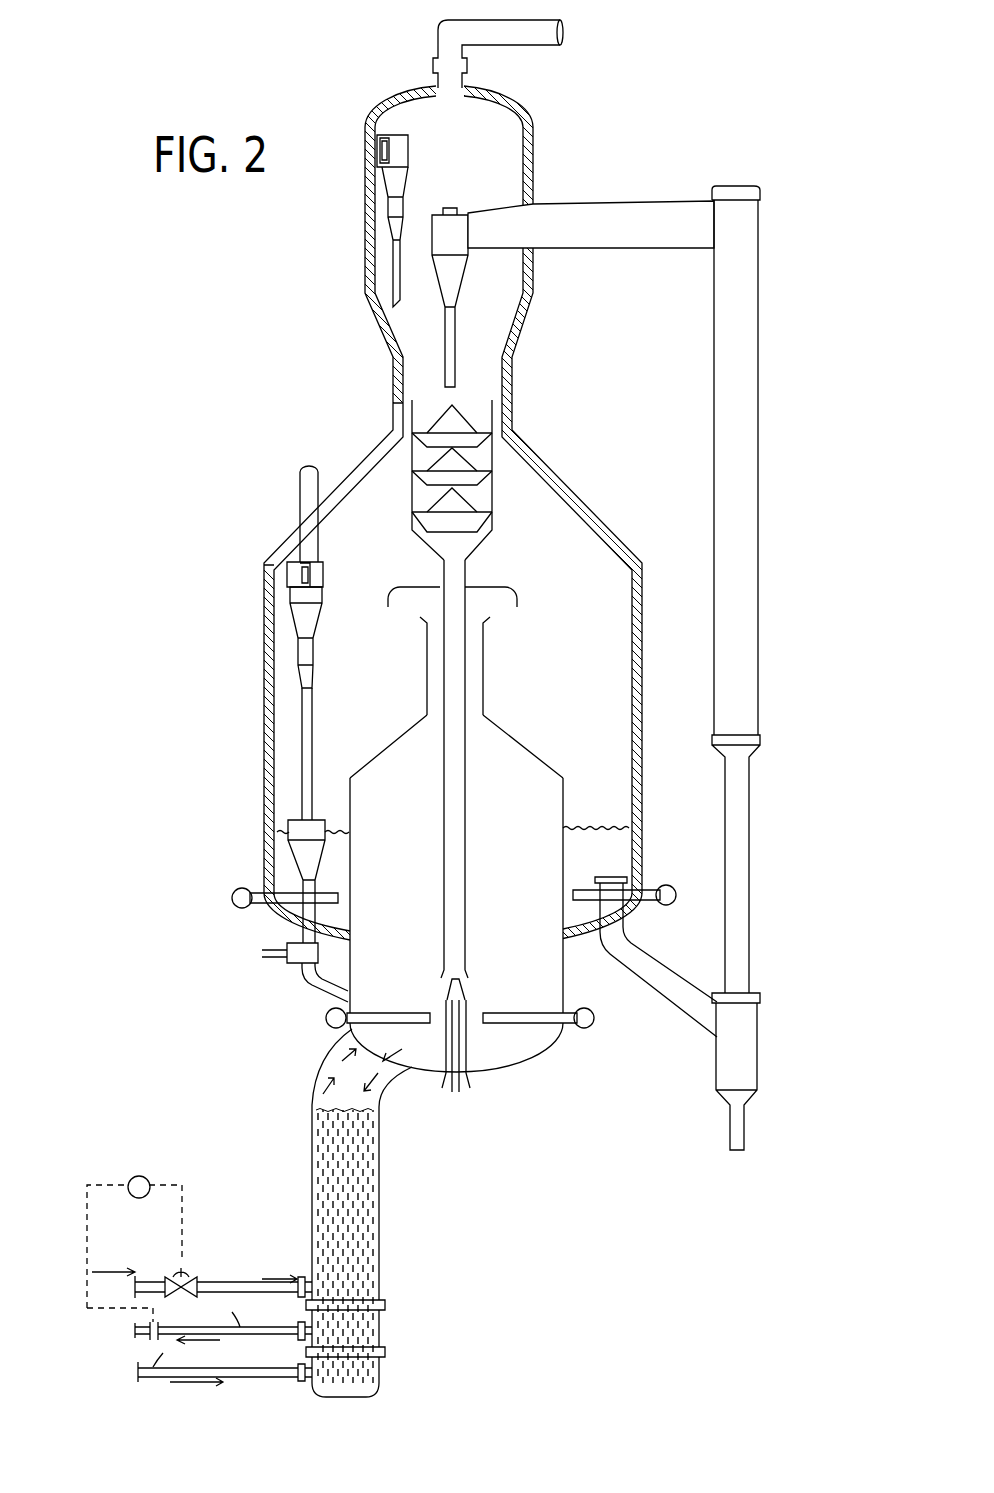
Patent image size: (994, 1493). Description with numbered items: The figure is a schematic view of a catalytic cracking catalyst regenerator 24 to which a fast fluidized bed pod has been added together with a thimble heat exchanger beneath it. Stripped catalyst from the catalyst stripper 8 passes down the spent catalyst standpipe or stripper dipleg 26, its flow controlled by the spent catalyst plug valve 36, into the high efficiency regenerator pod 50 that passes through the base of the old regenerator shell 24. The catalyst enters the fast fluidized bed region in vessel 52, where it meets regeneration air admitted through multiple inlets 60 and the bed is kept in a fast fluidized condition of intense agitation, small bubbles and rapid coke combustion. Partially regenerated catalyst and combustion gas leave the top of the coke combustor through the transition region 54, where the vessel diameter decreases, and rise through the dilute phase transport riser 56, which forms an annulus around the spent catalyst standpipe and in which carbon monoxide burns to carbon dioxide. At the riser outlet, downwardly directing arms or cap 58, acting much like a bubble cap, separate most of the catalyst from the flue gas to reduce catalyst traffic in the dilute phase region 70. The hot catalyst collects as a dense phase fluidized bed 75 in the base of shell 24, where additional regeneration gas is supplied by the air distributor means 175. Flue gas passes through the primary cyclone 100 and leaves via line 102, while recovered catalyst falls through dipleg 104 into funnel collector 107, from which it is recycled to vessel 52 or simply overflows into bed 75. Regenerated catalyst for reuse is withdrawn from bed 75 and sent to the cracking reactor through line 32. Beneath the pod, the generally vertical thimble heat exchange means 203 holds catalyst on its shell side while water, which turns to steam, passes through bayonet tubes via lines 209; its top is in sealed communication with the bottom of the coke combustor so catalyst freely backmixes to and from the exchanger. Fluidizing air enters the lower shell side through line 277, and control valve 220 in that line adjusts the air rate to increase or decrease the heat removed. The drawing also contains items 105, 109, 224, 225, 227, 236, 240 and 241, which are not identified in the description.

The catalyst stripper 8 is at (495, 458).
The regenerator shell 24 is at (262, 705).
The spent catalyst standpipe 26 is at (488, 542).
The regenerated catalyst line 32 is at (657, 995).
The spent catalyst plug valve 36 is at (467, 1000).
The high efficiency regenerator pod 50 is at (518, 1062).
The fast fluidized bed region 52 is at (510, 824).
The transition region 54 is at (518, 740).
The dilute phase transport riser 56 is at (473, 693).
The downwardly directing arms or cap 58 is at (408, 587).
The air inlets 60 is at (547, 1023).
The dilute phase region 70 is at (390, 511).
The dense phase fluidized bed 75 is at (618, 850).
The primary cyclone 100 is at (292, 622).
The flue gas line 102 is at (298, 513).
The cyclone dipleg 104 is at (300, 760).
The flow control box 105 is at (290, 967).
The funnel collector 107 is at (290, 832).
The return conduit 109 is at (318, 987).
The air distributor means 175 is at (268, 915).
The thimble heat exchange means 203 is at (312, 1182).
The heat exchange medium lines 209 is at (263, 1328).
The control valve 220 is at (193, 1277).
The steam valve 224 is at (153, 1338).
The controller signal line 225 is at (87, 1207).
The control line 227 is at (183, 1223).
The flow recorder controller 236 is at (140, 1175).
The riser bottom cap 240 is at (377, 1393).
The flange 241 is at (380, 1322).
The fluidizing air line 277 is at (240, 1282).